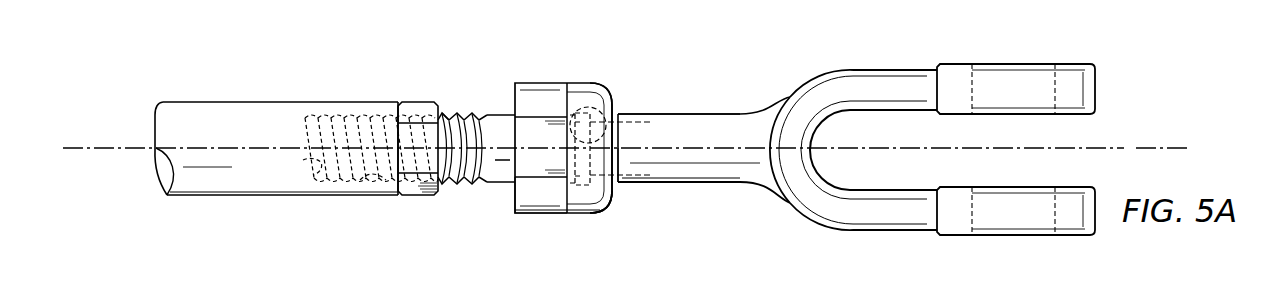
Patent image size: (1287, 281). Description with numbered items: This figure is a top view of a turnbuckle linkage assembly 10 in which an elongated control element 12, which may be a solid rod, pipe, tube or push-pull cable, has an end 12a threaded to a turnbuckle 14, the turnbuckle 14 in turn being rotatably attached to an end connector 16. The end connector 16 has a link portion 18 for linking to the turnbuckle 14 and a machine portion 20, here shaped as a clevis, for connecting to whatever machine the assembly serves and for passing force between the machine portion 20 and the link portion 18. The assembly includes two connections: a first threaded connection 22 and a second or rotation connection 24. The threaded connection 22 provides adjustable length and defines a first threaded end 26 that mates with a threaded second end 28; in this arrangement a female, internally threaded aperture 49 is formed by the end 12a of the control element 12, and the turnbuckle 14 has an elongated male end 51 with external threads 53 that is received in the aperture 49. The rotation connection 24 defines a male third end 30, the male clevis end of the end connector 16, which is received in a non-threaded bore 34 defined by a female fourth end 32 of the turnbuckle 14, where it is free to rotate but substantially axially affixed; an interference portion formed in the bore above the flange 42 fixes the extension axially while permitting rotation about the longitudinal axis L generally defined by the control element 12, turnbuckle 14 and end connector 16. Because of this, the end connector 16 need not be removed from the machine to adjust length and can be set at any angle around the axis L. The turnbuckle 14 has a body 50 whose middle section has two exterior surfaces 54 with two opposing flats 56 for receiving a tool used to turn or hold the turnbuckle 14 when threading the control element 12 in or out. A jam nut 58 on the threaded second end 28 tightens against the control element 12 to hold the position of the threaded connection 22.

The turnbuckle linkage assembly 10 is at (770, 54).
The elongated control element 12 is at (205, 112).
The end of control element 12a is at (198, 198).
The turnbuckle 14 is at (533, 79).
The end connector 16 is at (708, 126).
The link portion 18 is at (708, 173).
The machine portion 20 is at (902, 88).
The first threaded connection 22 is at (433, 132).
The rotation connection 24 is at (626, 77).
The first threaded end 26 is at (287, 102).
The threaded second end 28 is at (462, 185).
The male third end 30 is at (582, 196).
The female fourth end 32 is at (613, 206).
The bore 34 is at (580, 108).
The flange 42 is at (622, 127).
The internally threaded aperture 49 is at (377, 187).
The body 50 is at (543, 204).
The elongated male end 51 is at (305, 162).
The external threads 53 is at (449, 113).
The exterior surface 54 is at (527, 128).
The flats 56 is at (528, 160).
The jam nut 58 is at (412, 196).
The longitudinal axis L is at (1126, 148).